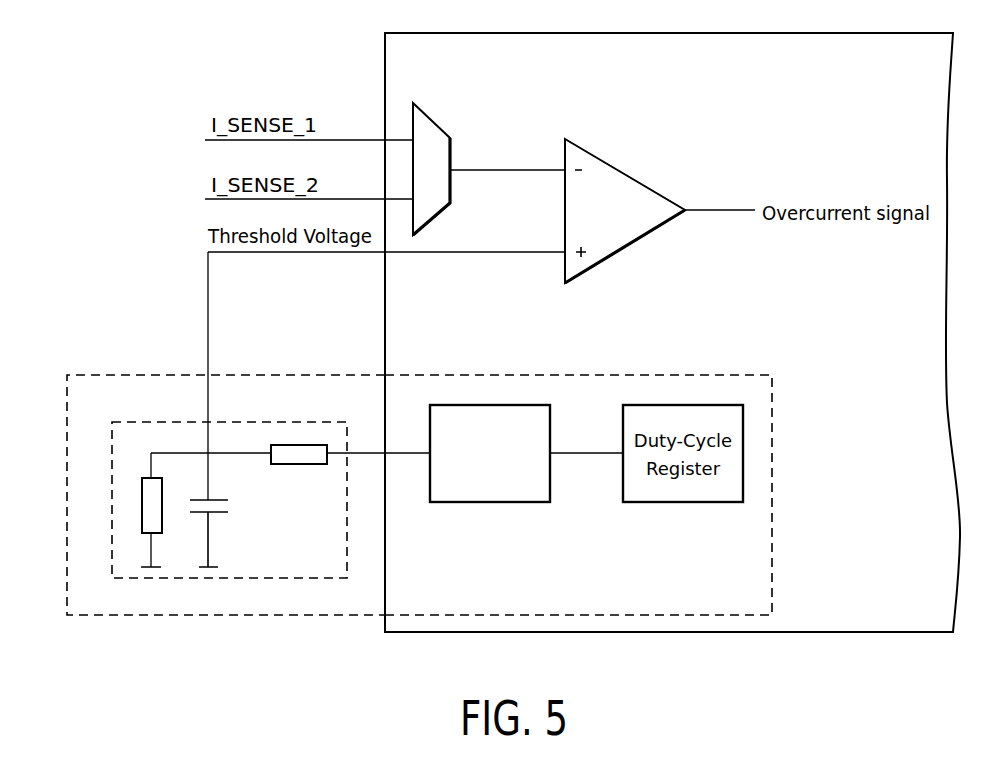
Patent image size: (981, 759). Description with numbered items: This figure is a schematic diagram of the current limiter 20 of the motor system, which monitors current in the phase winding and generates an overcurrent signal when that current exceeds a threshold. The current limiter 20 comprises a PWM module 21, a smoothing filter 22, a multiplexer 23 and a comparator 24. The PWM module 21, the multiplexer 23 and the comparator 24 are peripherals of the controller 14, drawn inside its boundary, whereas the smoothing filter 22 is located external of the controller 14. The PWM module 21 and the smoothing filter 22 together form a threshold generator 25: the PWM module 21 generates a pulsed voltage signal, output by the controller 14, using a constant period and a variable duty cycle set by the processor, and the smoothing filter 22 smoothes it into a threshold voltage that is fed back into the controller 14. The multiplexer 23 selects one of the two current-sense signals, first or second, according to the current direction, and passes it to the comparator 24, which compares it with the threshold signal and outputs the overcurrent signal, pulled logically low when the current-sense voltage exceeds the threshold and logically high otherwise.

The controller 14 is at (815, 632).
The current limiter 20 is at (251, 637).
The PWM module 21 is at (485, 502).
The smoothing filter 22 is at (322, 578).
The multiplexer 23 is at (441, 131).
The comparator 24 is at (593, 152).
The threshold generator 25 is at (600, 375).